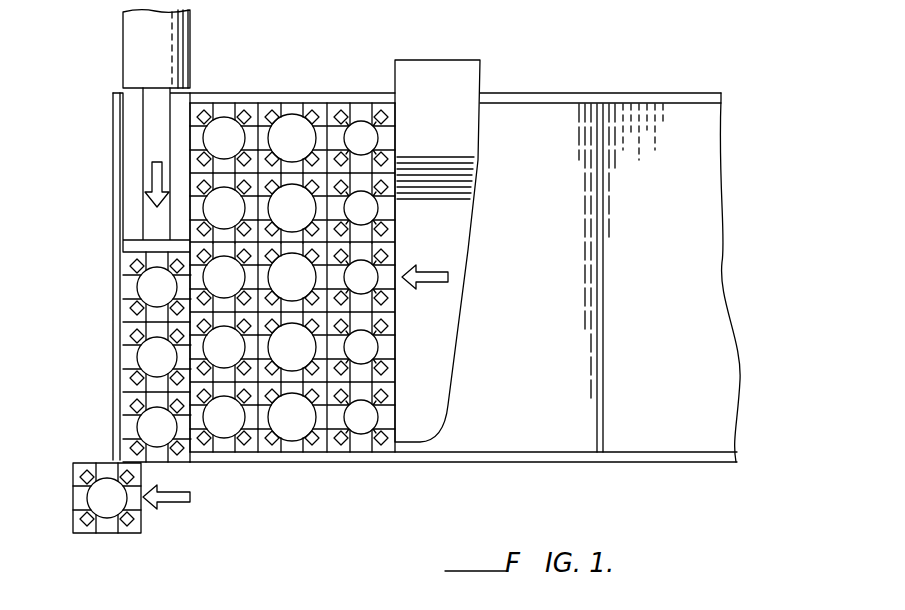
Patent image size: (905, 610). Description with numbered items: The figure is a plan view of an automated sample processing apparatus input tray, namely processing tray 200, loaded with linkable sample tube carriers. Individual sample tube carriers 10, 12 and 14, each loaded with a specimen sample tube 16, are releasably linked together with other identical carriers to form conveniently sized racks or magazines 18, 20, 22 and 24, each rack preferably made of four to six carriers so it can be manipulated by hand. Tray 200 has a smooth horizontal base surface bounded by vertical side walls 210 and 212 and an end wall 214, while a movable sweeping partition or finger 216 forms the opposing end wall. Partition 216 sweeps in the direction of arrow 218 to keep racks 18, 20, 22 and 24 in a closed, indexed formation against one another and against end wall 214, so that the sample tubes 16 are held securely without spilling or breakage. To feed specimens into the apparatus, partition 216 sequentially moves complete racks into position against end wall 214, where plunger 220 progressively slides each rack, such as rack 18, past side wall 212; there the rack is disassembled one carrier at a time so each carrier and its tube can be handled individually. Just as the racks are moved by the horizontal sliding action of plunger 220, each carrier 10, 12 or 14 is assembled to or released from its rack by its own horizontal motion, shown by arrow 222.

The linkable sample tube carrier 10 is at (73, 479).
The linkable sample tube carrier 12 is at (125, 420).
The linkable sample tube carrier 14 is at (125, 349).
The specimen sample tube 16 is at (137, 360).
The rack 18 is at (108, 252).
The rack 20 is at (223, 88).
The rack 22 is at (296, 88).
The rack 24 is at (362, 88).
The processing tray 200 is at (712, 155).
The side wall 210 is at (635, 98).
The side wall 212 is at (628, 460).
The end wall 214 is at (113, 170).
The movable sweeping partition 216 is at (467, 166).
The arrow 218 is at (437, 267).
The plunger 220 is at (123, 37).
The arrow 222 is at (176, 505).